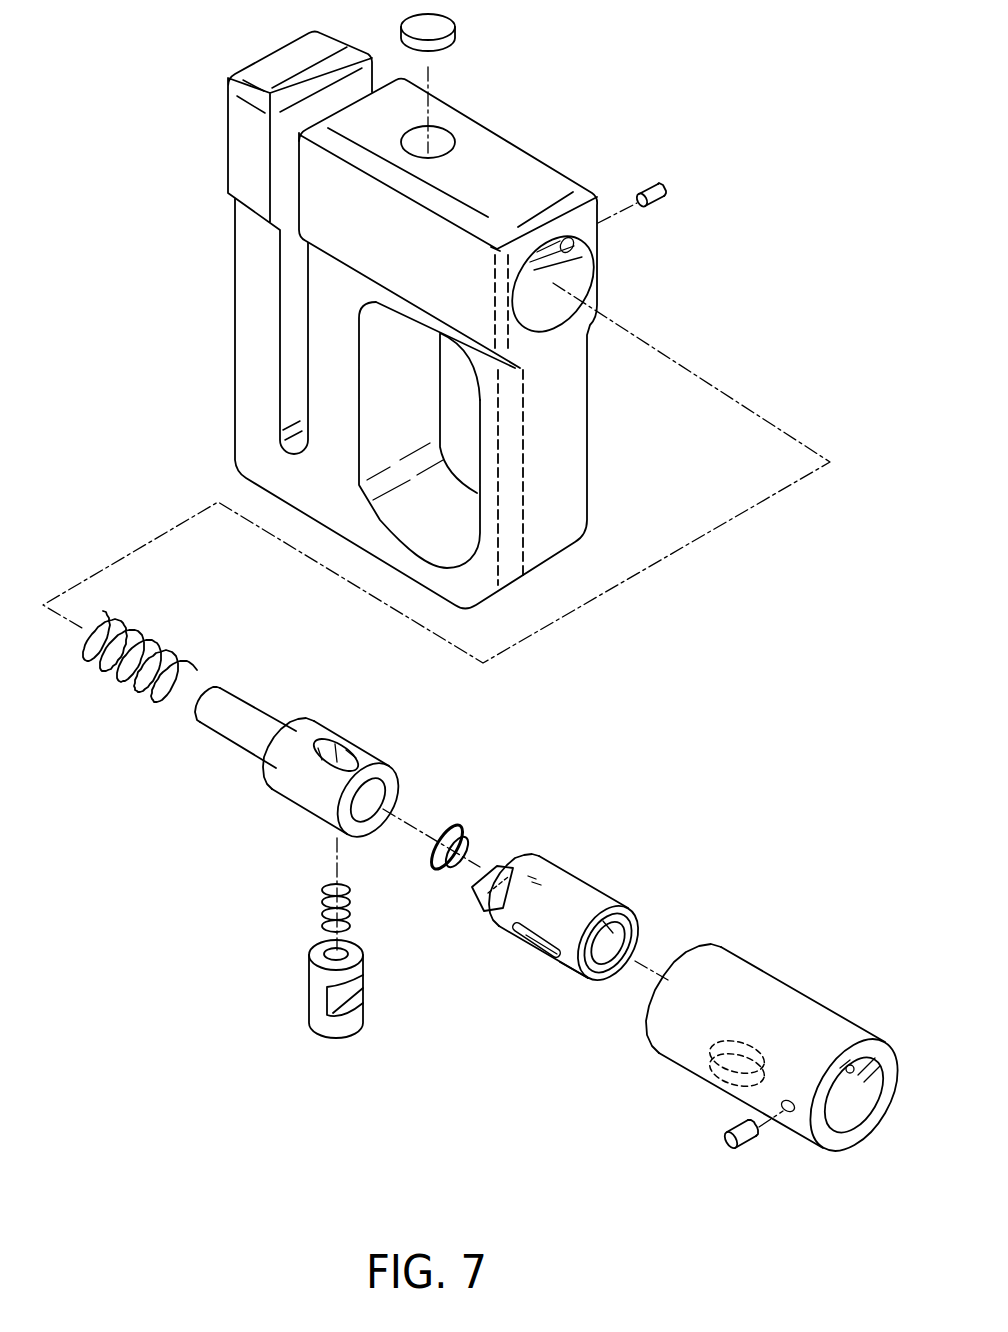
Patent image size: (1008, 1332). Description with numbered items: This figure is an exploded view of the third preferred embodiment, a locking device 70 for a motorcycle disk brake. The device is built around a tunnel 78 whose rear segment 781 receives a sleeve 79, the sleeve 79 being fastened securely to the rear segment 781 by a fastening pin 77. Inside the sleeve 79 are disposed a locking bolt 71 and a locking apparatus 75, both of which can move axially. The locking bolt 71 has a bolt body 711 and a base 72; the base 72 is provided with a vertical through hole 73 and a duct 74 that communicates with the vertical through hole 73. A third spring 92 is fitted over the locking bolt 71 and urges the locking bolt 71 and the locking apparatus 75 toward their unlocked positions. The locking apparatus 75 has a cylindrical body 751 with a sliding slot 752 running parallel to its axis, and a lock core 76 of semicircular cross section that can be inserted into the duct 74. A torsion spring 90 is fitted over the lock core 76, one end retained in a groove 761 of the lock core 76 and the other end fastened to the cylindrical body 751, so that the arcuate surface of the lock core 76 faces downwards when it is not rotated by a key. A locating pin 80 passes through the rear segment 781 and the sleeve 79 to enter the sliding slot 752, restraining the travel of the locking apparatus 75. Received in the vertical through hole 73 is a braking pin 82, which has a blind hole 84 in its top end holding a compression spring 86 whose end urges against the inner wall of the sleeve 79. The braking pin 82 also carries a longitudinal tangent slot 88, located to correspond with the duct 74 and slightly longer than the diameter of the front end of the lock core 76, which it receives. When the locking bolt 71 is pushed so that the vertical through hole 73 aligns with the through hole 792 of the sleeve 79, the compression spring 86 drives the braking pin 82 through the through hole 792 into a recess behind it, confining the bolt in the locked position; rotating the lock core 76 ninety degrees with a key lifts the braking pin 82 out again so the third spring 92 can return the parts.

The locking device 70 is at (218, 363).
The fastening pin 77 is at (648, 174).
The tunnel 78 is at (563, 278).
The rear segment 781 is at (590, 288).
The third spring 92 is at (125, 690).
The bolt body 711 is at (232, 728).
The locking bolt 71 is at (270, 790).
The base 72 is at (320, 733).
The vertical through hole 73 is at (350, 750).
The duct 74 is at (377, 787).
The torsion spring 90 is at (467, 820).
The locking apparatus 75 is at (588, 873).
The lock core 76 is at (510, 867).
The groove 761 is at (495, 870).
The sliding slot 752 is at (533, 942).
The cylindrical body 751 is at (570, 937).
The sleeve 79 is at (775, 970).
The through hole 792 is at (712, 1080).
The locating pin 80 is at (743, 1147).
The compression spring 86 is at (317, 910).
The braking pin 82 is at (302, 1005).
The blind hole 84 is at (330, 955).
The tangent slot 88 is at (347, 997).